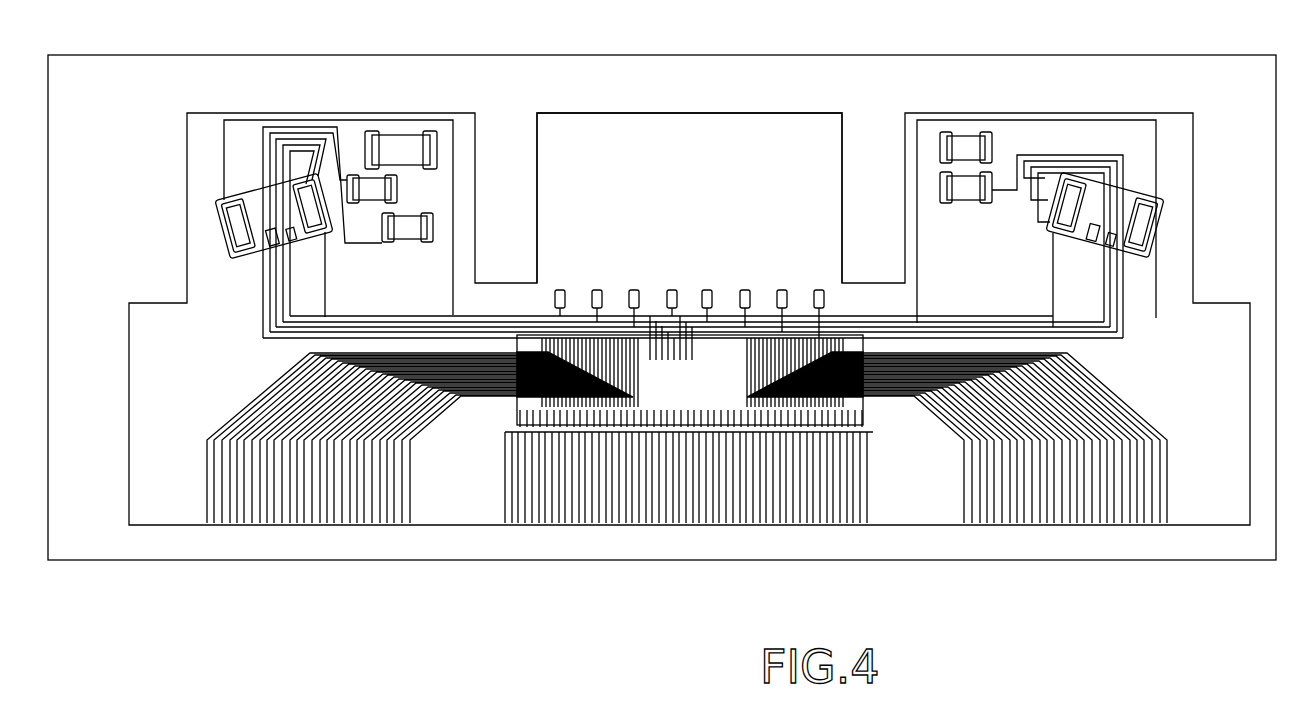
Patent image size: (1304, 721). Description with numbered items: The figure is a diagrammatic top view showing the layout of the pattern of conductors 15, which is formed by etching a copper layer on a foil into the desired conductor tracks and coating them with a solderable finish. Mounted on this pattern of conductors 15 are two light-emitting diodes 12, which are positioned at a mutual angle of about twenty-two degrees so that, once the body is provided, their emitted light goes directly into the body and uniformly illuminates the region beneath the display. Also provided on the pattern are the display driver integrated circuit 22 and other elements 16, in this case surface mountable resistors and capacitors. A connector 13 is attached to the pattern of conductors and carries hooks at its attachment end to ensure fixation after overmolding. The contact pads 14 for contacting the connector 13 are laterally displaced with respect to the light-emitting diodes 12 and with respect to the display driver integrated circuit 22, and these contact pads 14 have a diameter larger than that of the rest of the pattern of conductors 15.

The light emitting diodes 12 is at (1090, 195).
The connector 13 is at (648, 190).
The contact pads 14 is at (595, 310).
The pattern of conductors 15 is at (1070, 500).
The other elements 16 is at (403, 227).
The display driver integrated circuit 22 is at (682, 385).